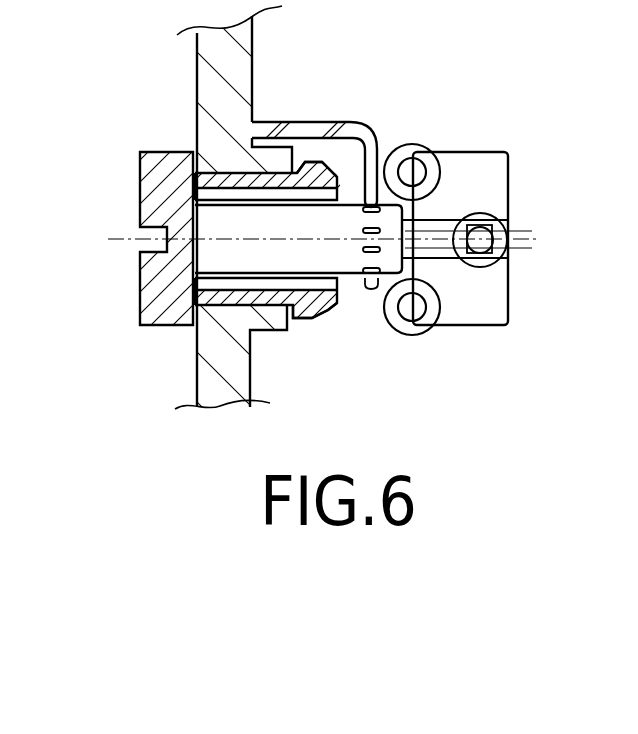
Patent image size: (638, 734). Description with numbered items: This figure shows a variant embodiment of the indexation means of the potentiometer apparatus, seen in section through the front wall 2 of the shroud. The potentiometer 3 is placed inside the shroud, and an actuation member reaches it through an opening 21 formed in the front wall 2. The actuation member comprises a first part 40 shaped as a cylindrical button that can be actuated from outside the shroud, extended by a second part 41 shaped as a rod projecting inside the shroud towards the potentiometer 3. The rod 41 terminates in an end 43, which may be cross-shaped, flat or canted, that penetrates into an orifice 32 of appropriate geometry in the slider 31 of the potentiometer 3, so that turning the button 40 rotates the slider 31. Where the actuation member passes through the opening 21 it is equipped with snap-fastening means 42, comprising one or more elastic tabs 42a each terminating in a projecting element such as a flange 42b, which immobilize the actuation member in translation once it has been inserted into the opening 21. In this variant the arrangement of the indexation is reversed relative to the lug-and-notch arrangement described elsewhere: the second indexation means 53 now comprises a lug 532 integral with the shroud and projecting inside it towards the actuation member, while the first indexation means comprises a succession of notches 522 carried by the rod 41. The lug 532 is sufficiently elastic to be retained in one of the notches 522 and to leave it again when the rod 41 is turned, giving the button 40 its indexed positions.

The front wall 2 is at (241, 65).
The potentiometer 3 is at (490, 182).
The opening 21 is at (198, 342).
The slider 31 is at (495, 253).
The orifice 32 is at (530, 237).
The first part 40 is at (157, 199).
The second part 41 is at (333, 257).
The snap-fastening means 42 is at (318, 324).
The elastic tab 42a is at (257, 335).
The sleeve collar 42b is at (328, 322).
The end 43 is at (508, 222).
The second indexation means 53 is at (379, 104).
The notches 522 is at (392, 318).
The lug 532 is at (452, 153).